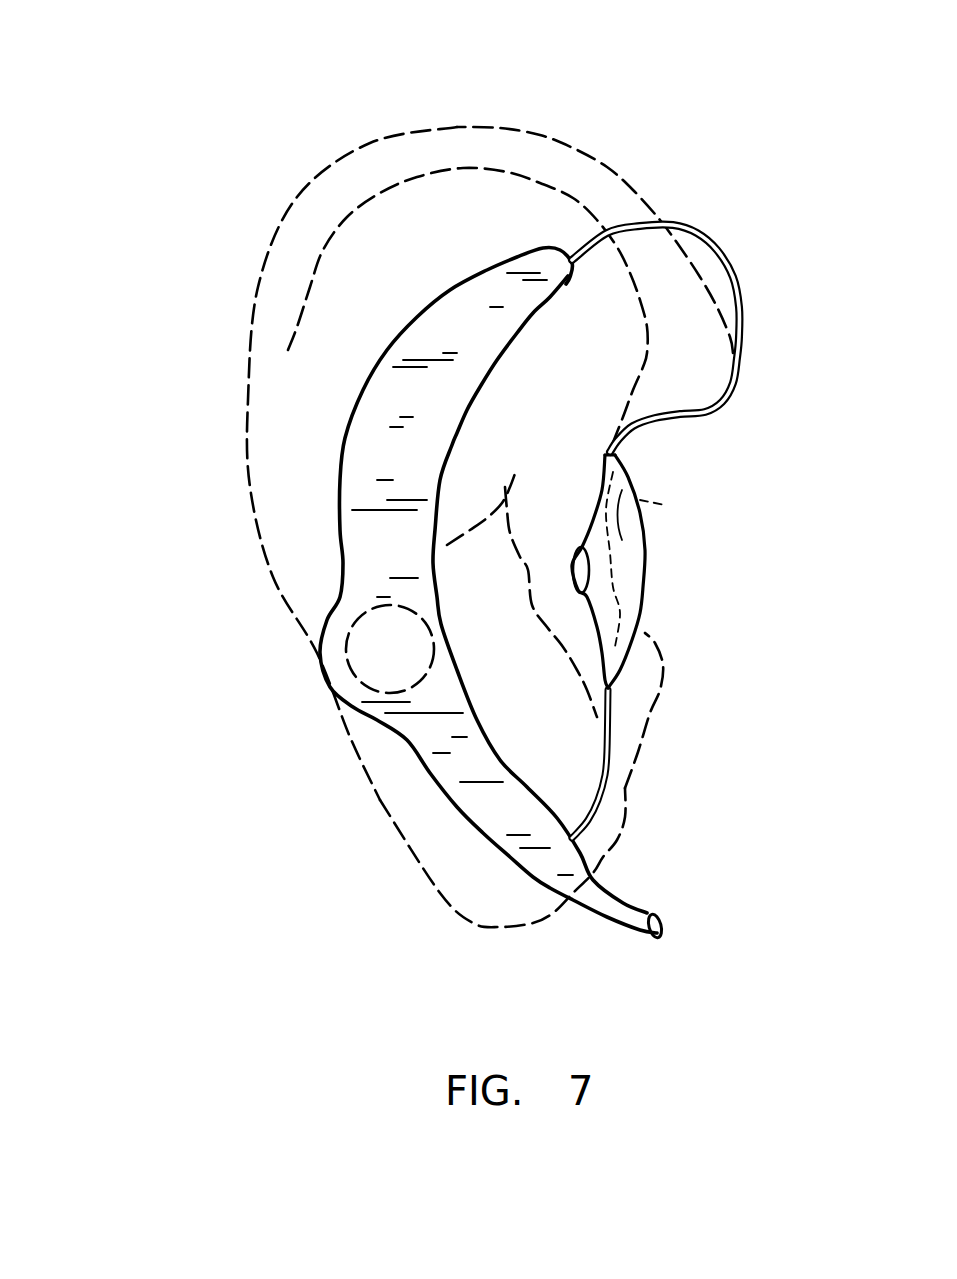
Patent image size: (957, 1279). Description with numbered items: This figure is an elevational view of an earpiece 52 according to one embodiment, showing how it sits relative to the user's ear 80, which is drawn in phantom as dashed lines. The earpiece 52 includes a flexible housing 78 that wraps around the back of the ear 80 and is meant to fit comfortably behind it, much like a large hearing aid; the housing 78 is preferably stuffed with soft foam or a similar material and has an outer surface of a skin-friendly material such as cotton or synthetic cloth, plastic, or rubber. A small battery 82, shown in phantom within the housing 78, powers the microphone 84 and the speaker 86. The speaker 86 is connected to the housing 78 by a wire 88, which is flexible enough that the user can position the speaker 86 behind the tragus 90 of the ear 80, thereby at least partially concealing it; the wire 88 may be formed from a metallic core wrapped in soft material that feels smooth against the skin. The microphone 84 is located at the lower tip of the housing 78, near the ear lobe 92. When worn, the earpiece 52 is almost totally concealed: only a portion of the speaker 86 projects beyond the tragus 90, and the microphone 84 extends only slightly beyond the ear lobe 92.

The earpiece 52 is at (422, 662).
The flexible housing 78 is at (360, 558).
The ear 80 is at (533, 133).
The battery 82 is at (370, 673).
The microphone 84 is at (660, 937).
The speaker 86 is at (608, 513).
The wire 88 is at (717, 247).
The tragus 90 is at (655, 640).
The ear lobe (lobule) 92 is at (480, 890).